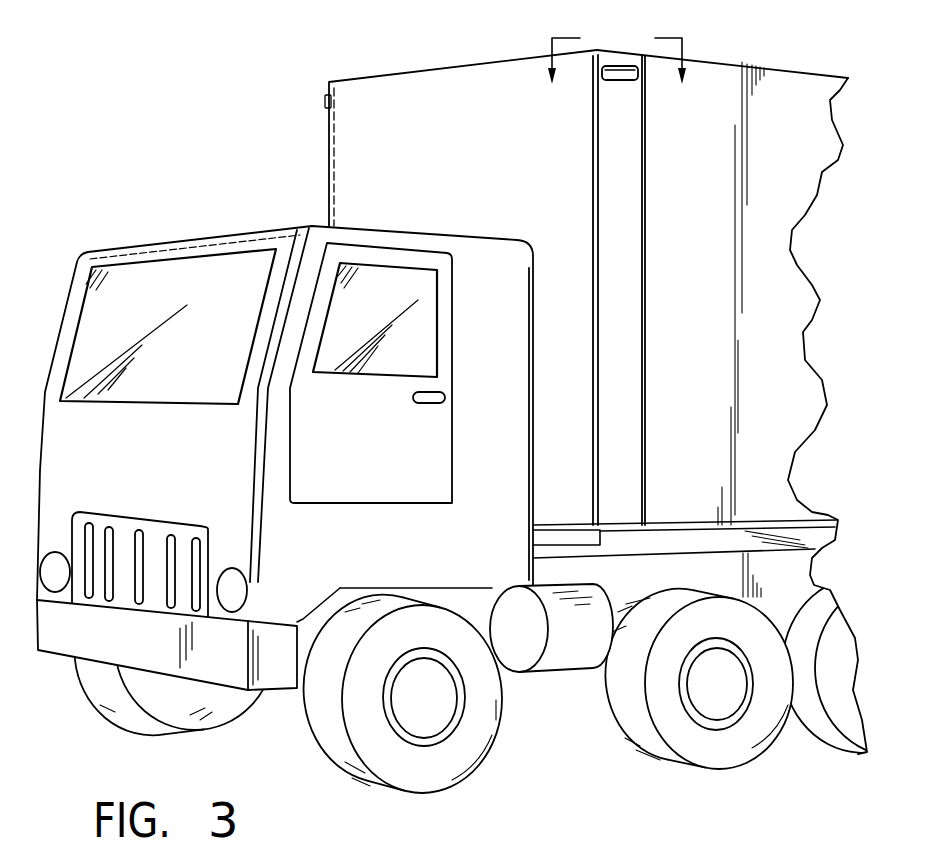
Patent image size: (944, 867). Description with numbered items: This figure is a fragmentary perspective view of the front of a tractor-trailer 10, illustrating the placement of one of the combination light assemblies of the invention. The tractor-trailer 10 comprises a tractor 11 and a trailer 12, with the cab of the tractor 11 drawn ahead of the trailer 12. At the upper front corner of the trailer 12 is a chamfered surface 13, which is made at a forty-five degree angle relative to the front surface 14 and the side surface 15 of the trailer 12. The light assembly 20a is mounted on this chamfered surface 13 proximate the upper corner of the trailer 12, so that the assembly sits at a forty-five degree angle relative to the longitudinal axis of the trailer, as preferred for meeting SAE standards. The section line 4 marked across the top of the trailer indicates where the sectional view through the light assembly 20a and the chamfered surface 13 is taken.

The tractor-trailer 10 is at (222, 149).
The tractor 11 is at (72, 300).
The trailer 12 is at (347, 80).
The chamfered surface 13 is at (633, 130).
The front surface 14 is at (444, 178).
The side surface 15 is at (703, 237).
The light assembly 20a is at (607, 81).
The section line 4- 4 is at (617, 47).